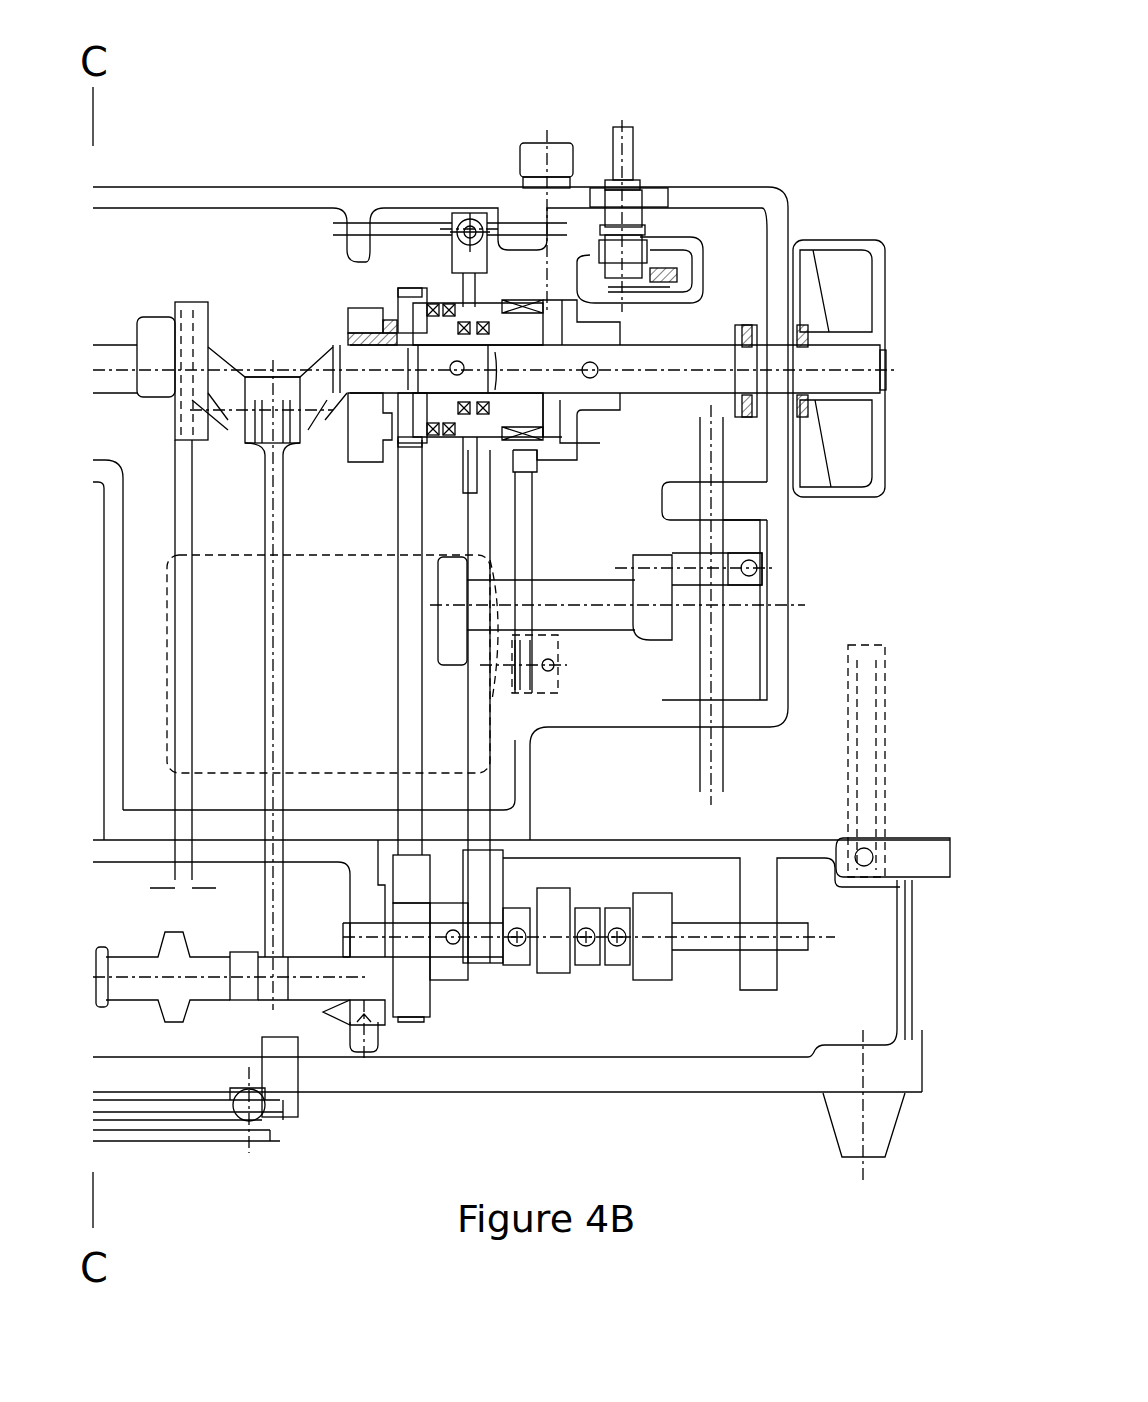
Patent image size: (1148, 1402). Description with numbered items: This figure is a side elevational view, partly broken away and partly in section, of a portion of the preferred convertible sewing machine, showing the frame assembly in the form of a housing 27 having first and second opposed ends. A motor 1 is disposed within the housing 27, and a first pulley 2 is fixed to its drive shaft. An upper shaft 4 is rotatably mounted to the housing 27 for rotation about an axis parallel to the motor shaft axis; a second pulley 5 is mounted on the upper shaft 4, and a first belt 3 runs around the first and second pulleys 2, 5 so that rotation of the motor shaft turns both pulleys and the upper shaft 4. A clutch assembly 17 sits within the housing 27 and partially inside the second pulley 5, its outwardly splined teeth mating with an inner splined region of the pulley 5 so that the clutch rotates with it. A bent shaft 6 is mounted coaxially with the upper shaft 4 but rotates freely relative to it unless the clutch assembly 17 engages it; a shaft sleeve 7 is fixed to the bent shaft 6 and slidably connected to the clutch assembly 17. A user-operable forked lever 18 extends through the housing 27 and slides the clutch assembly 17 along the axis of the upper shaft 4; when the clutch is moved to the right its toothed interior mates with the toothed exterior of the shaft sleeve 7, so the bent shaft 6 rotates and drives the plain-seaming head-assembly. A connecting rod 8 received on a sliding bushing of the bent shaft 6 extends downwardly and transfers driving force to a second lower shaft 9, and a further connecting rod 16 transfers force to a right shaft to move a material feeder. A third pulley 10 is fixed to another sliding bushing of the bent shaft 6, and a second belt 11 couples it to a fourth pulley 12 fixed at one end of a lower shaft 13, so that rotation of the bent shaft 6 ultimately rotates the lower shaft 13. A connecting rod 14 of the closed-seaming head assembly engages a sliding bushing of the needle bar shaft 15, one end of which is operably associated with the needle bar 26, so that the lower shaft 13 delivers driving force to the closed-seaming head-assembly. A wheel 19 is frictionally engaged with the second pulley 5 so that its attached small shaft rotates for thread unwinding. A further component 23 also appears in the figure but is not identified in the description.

The motor 1 is at (357, 600).
The first pulley 2 is at (553, 683).
The first belt 3 is at (524, 530).
The upper shaft 4 is at (638, 382).
The second pulley 5 is at (563, 449).
The bent shaft 6 is at (343, 356).
The shaft sleeve 7 is at (448, 397).
The connecting rod 8 is at (275, 500).
The second lower shaft 9 is at (298, 967).
The third pulley 10 is at (420, 300).
The second belt 11 is at (410, 507).
The fourth pulley 12 is at (420, 985).
The lower shaft 13 is at (713, 945).
The connecting rod 14 is at (480, 885).
The needle bar shaft 15 is at (576, 618).
The connecting rod 16 is at (183, 456).
The clutch assembly 17 is at (471, 467).
The forked lever 18 is at (480, 252).
The wheel 19 is at (596, 292).
The adjusting screw 23 is at (637, 218).
The needle bar 26 is at (720, 760).
The housing 27 is at (773, 553).